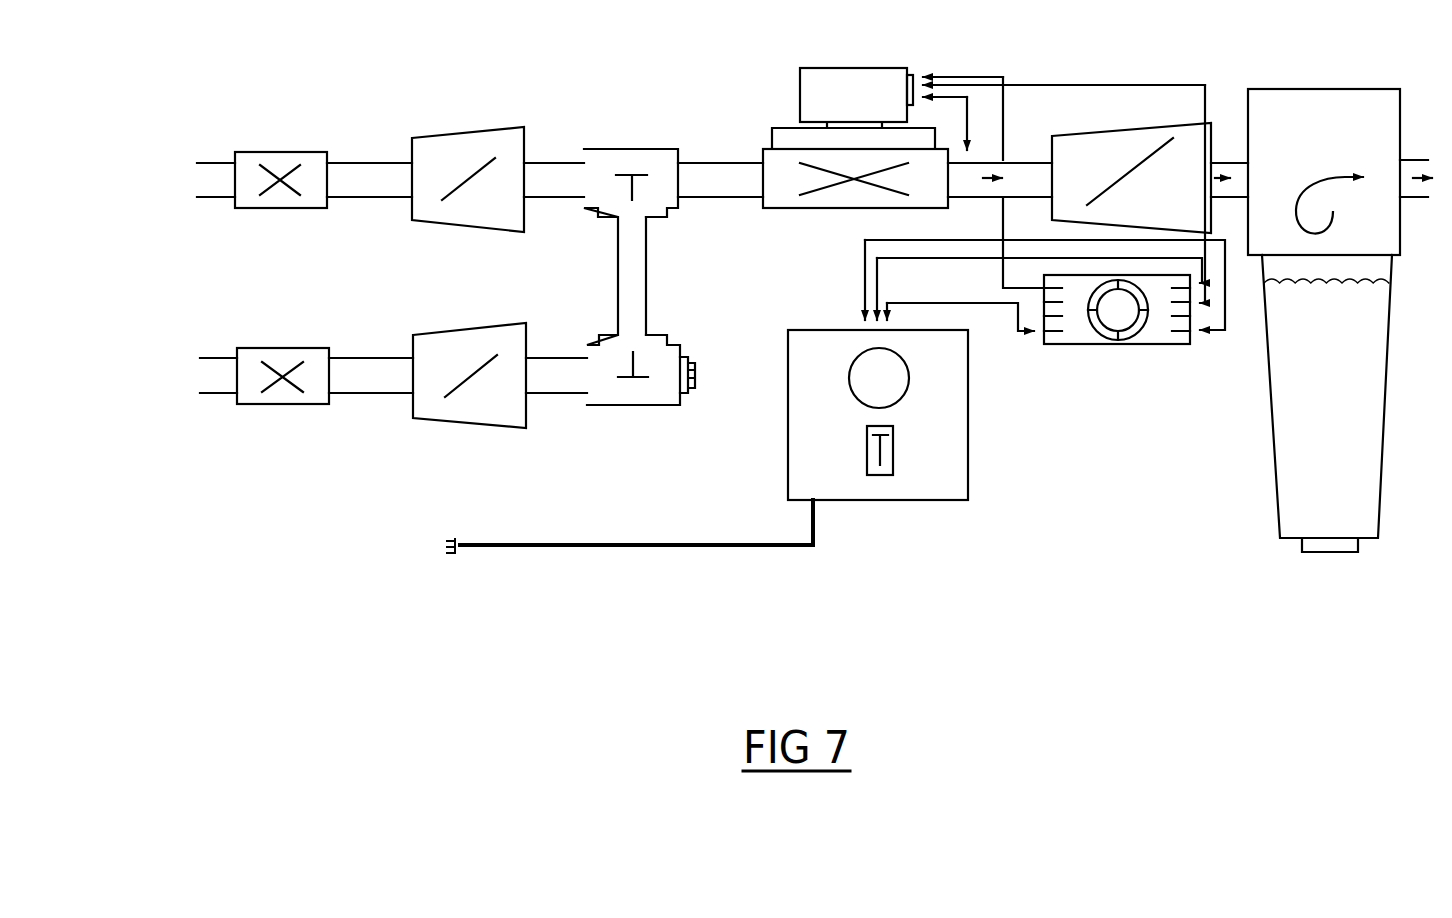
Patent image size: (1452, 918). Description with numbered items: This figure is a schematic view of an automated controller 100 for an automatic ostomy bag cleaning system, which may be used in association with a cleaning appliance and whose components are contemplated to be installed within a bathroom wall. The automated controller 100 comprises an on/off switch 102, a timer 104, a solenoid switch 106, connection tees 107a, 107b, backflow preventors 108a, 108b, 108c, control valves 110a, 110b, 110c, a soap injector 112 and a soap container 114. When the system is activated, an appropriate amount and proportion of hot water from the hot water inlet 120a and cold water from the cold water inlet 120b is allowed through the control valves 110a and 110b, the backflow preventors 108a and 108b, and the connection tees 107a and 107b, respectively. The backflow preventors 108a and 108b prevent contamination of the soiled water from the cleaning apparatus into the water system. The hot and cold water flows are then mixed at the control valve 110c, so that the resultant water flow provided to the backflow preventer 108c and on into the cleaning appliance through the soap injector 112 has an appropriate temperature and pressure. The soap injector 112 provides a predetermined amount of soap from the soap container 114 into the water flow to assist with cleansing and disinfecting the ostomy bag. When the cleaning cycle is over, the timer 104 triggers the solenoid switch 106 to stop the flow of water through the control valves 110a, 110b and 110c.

The automated controller 100 is at (1157, 497).
The on/off switch 102 is at (945, 430).
The timer 104 is at (1155, 333).
The solenoid switch 106 is at (875, 108).
The connection tee 107a is at (627, 155).
The connection tee 107b is at (625, 397).
The backflow preventor 108a is at (465, 145).
The backflow preventor 108b is at (465, 408).
The backflow preventer 108c is at (1072, 148).
The control valve 110a is at (305, 160).
The control valve 110b is at (278, 397).
The control valve 110c is at (781, 199).
The soap injector 112 is at (1350, 150).
The soap container 114 is at (1348, 380).
The hot water inlet 120a is at (186, 180).
The cold water inlet 120b is at (187, 375).